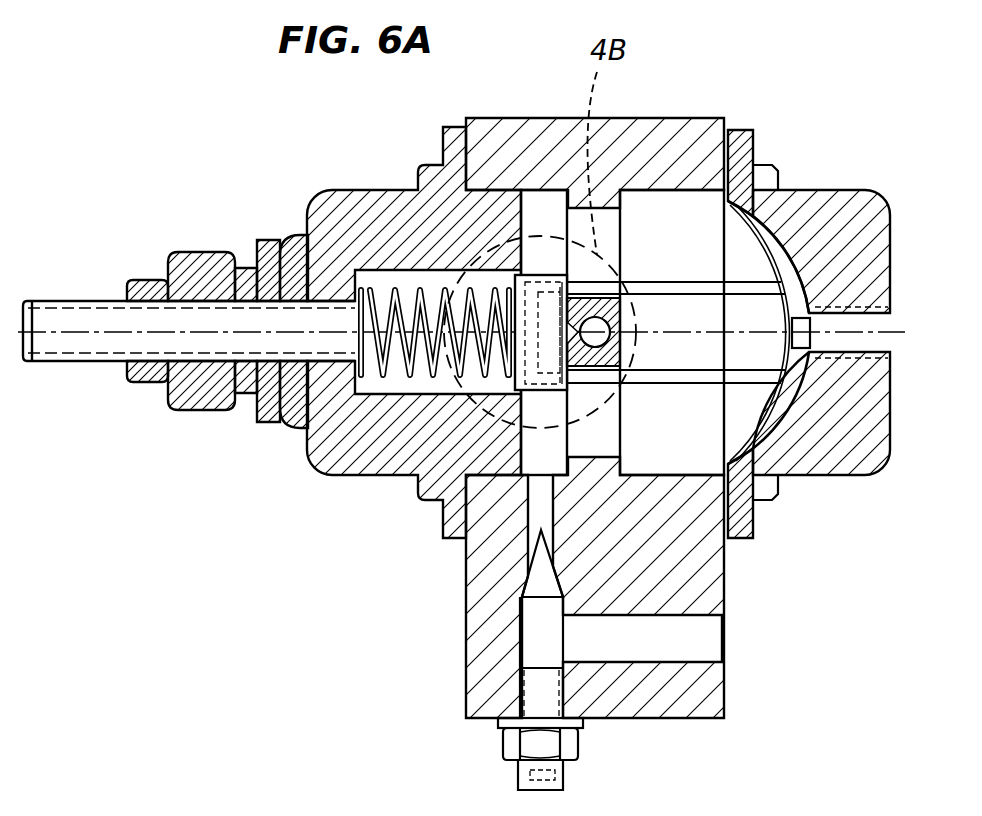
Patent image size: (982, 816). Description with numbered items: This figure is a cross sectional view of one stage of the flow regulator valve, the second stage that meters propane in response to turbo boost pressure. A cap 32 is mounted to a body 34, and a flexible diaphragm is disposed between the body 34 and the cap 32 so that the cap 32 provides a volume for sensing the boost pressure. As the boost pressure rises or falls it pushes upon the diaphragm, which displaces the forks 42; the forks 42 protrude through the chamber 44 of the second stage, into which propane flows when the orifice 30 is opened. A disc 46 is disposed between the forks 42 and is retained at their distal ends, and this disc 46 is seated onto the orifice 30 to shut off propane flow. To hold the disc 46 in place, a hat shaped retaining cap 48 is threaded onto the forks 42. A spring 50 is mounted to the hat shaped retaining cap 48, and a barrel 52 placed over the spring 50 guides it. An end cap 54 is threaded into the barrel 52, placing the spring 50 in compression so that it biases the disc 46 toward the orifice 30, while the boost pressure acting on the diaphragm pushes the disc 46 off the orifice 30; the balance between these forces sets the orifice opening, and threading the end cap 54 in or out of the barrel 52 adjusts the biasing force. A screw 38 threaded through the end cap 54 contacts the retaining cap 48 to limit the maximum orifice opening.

The orifice 30 is at (575, 262).
The cap 32 is at (862, 190).
The body 34 is at (712, 118).
The screw 38 is at (62, 300).
The forks 42 is at (697, 279).
The chamber 44 is at (551, 205).
The disc 46 is at (460, 377).
The hat shaped retaining cap 48 is at (527, 430).
The spring 50 is at (420, 273).
The barrel 52 is at (308, 215).
The end cap 54 is at (203, 398).